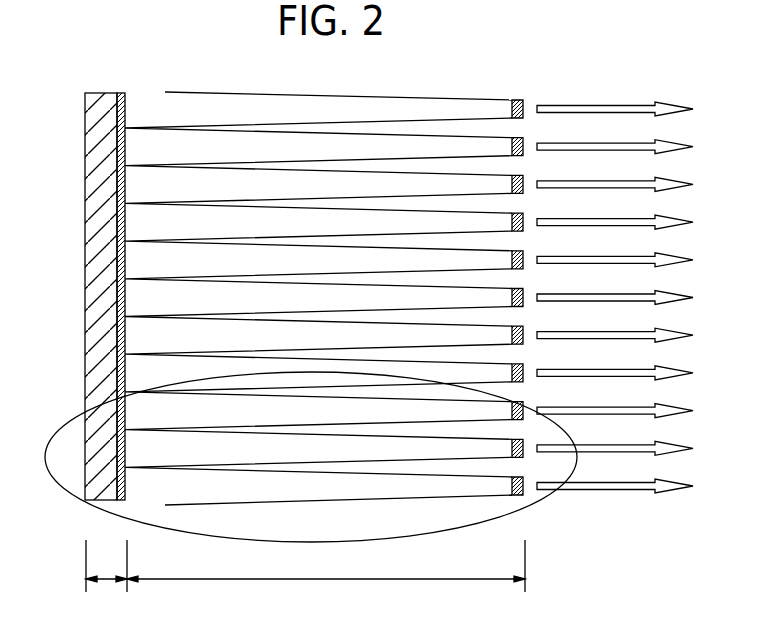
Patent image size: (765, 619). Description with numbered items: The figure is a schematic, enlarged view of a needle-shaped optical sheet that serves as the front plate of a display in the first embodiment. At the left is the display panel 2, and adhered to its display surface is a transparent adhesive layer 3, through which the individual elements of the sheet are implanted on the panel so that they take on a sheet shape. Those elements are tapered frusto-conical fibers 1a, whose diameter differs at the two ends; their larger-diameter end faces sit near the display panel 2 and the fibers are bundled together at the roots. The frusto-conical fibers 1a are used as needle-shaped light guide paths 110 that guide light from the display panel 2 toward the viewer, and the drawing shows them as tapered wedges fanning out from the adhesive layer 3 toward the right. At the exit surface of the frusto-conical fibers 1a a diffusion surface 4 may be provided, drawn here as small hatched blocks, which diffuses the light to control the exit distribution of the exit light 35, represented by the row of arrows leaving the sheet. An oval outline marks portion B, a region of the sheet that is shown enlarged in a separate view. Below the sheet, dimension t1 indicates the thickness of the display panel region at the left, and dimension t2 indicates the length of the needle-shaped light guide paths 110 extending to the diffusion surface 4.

The display panel 2 is at (102, 100).
The transparent adhesive layer 3 is at (122, 93).
The needle-shaped light guide path 110 is at (335, 100).
The frusto-conical fiber 1a is at (290, 493).
The diffusion surface 4 is at (518, 100).
The exit light 35 is at (608, 102).
The portion B is at (537, 505).
The thickness t1 is at (106, 566).
The thickness t2 is at (326, 566).